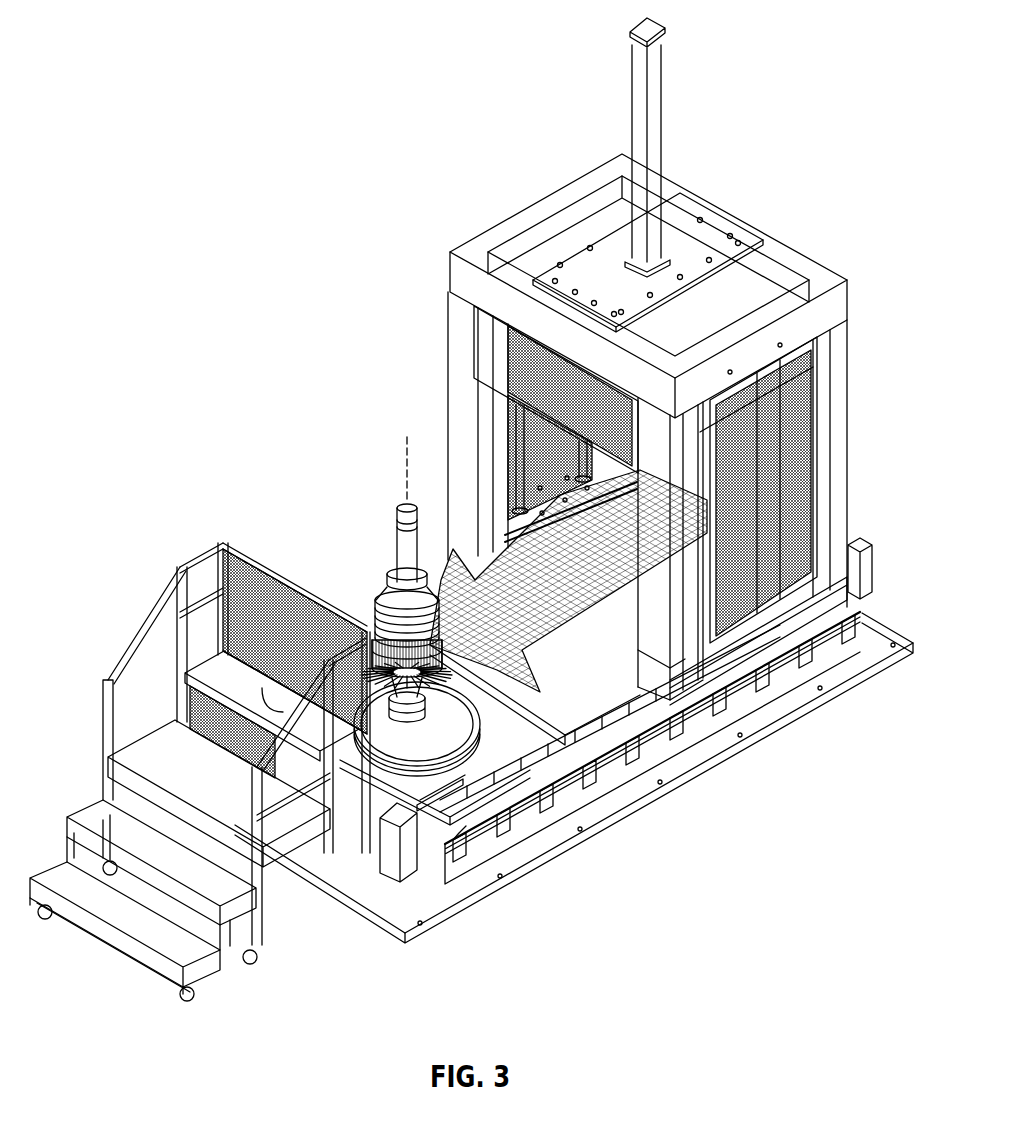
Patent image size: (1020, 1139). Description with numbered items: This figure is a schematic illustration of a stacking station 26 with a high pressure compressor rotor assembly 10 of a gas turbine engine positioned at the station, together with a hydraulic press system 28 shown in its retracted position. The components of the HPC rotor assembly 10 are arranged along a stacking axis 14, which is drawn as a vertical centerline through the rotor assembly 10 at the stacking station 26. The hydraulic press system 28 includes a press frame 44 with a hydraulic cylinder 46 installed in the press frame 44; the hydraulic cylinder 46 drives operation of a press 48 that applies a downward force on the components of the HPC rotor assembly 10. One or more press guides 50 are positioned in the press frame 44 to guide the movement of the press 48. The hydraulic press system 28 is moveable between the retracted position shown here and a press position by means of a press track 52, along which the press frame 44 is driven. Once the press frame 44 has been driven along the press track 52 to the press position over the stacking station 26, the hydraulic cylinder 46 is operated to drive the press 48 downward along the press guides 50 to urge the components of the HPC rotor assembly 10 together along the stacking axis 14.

The HPC rotor assembly 10 is at (372, 592).
The stacking axis 14 is at (405, 490).
The stacking station 26 is at (407, 710).
The hydraulic press system 28 is at (267, 57).
The press frame 44 is at (848, 495).
The hydraulic cylinder 46 is at (627, 258).
The press 48 is at (793, 387).
The press guides 50 is at (510, 452).
The press track 52 is at (660, 748).